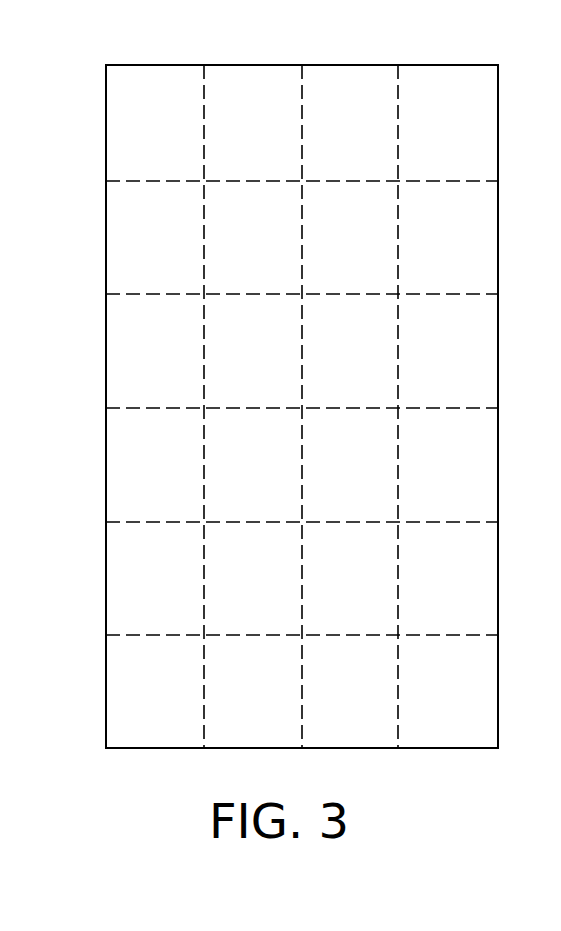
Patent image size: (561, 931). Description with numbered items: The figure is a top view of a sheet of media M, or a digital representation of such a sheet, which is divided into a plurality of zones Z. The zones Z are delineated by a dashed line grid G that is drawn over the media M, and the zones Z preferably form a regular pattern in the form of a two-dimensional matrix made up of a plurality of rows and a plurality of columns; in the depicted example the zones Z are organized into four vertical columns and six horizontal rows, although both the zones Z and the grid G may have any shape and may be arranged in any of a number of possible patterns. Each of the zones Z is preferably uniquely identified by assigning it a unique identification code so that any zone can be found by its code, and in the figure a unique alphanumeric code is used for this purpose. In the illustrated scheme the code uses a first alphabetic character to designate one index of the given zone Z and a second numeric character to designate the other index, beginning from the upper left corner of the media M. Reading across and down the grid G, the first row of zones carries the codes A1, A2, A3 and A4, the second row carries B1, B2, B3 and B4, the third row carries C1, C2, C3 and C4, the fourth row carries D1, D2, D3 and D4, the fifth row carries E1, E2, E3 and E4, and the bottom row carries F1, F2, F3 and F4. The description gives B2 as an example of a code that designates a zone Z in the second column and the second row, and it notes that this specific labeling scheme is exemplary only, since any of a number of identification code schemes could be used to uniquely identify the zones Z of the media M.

The sheet of media M is at (476, 66).
The zones Z is at (220, 71).
The dashed line grid G is at (303, 130).
The identification code A1 is at (125, 161).
The identification code A2 is at (224, 161).
The identification code A3 is at (322, 161).
The identification code A4 is at (419, 161).
The identification code B1 is at (125, 275).
The identification code B2 is at (224, 275).
The identification code B3 is at (322, 275).
The identification code B4 is at (419, 275).
The identification code C1 is at (125, 388).
The identification code C2 is at (224, 388).
The identification code C3 is at (322, 388).
The identification code C4 is at (419, 388).
The identification code D1 is at (126, 501).
The identification code D2 is at (225, 501).
The identification code D3 is at (323, 501).
The identification code D4 is at (420, 501).
The identification code E1 is at (125, 615).
The identification code E2 is at (224, 615).
The identification code E3 is at (322, 615).
The identification code E4 is at (419, 615).
The identification code F1 is at (124, 728).
The identification code F2 is at (223, 728).
The identification code F3 is at (321, 728).
The identification code F4 is at (418, 728).